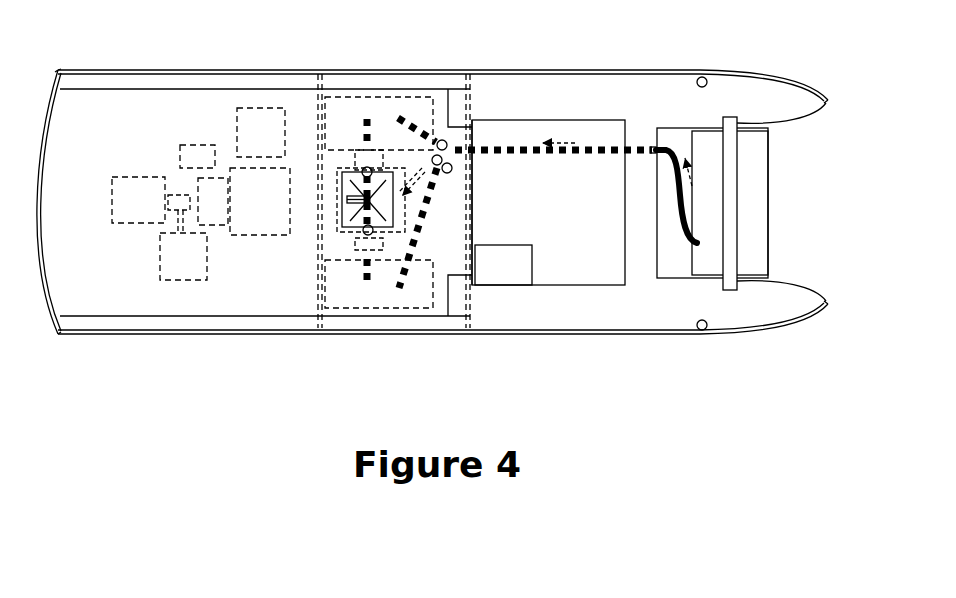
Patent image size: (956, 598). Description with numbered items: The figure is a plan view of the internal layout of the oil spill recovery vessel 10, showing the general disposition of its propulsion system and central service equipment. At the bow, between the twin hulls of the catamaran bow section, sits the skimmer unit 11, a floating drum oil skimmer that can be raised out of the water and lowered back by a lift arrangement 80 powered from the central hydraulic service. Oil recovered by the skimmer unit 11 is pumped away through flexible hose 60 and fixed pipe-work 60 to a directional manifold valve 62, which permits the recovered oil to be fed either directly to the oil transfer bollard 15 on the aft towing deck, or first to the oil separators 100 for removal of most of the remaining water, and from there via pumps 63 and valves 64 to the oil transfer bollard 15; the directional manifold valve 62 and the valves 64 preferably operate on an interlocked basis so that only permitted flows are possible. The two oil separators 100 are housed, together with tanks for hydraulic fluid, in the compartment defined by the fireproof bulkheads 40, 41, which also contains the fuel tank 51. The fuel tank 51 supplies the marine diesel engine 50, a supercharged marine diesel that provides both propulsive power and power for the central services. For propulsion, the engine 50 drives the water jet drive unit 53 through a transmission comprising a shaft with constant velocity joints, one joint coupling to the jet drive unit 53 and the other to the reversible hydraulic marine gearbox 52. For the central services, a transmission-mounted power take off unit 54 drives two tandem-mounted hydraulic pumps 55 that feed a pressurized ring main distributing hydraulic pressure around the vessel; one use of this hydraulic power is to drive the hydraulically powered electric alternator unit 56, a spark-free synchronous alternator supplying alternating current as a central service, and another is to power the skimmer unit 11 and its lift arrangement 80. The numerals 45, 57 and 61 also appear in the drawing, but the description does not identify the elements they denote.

The oil spill recovery vessel 10 is at (198, 63).
The skimmer unit 11 is at (757, 188).
The oil transfer bollard 15 is at (352, 207).
The fireproof bulkhead 40 is at (317, 290).
The fireproof bulkhead 41 is at (472, 288).
The battery 45 is at (487, 272).
The marine diesel engine 50 is at (247, 213).
The fuel tank 51 is at (335, 190).
The reversible hydraulic marine gearbox 52 is at (204, 214).
The water jet drive unit 53 is at (126, 214).
The power take off unit 54 is at (181, 197).
The hydraulic pumps 55 is at (171, 272).
The hydraulically powered electric alternator unit 56 is at (251, 144).
The sensor 57 is at (203, 143).
The flexible hose and fixed pipe-work 60 is at (673, 163).
The pump unit / transfer line 61 is at (569, 155).
The directional manifold valve 62 is at (452, 166).
The pumps 63 is at (357, 159).
The valves 64 is at (363, 171).
The lift arrangement 80 is at (734, 119).
The oil separators 100 is at (368, 103).